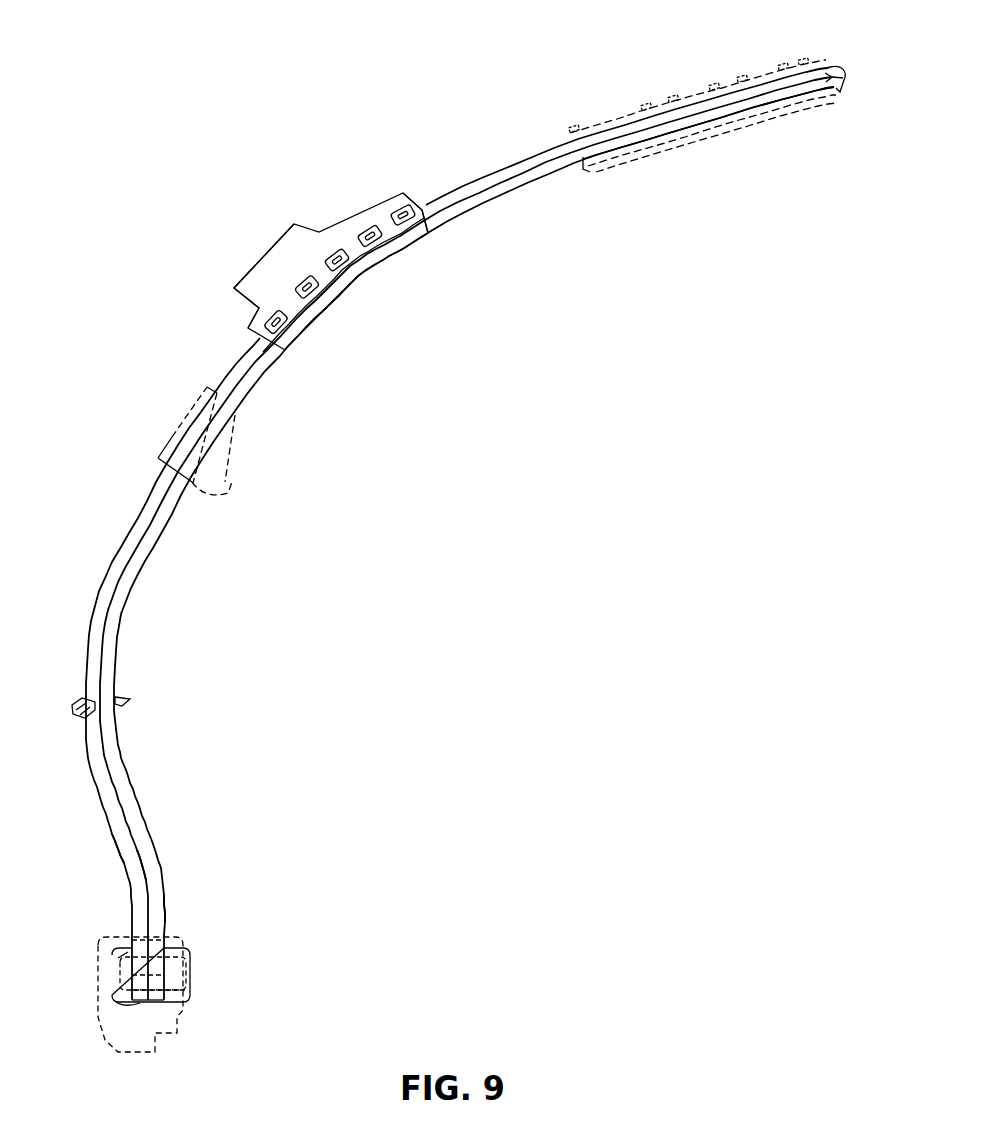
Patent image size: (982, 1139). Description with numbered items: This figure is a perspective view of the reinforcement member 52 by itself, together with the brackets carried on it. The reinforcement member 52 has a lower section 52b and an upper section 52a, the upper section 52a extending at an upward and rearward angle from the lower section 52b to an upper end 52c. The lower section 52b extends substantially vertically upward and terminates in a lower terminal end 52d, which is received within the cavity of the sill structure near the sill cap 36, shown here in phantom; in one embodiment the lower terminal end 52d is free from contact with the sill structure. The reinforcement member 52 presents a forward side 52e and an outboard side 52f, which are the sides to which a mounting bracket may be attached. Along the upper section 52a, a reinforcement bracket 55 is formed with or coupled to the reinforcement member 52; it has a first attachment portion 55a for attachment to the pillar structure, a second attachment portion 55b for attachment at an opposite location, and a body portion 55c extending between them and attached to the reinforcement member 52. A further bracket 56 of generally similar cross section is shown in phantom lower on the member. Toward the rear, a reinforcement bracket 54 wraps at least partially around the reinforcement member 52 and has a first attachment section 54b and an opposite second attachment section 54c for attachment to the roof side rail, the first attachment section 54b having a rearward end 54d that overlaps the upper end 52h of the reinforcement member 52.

The sill cap 36 is at (196, 990).
The reinforcement member 52 is at (140, 567).
The upper section 52a is at (608, 158).
The lower section 52b is at (167, 911).
The upper end 52c is at (818, 87).
The lower terminal end 52d is at (140, 1003).
The forward side 52e is at (135, 874).
The outboard side 52f is at (153, 857).
The upper end 52h is at (831, 66).
The reinforcement bracket 54 is at (733, 121).
The first attachment section 54b is at (580, 130).
The second attachment section 54c is at (668, 137).
The rearward end 54d is at (786, 65).
The reinforcement bracket 55 is at (346, 227).
The first attachment portion 55a is at (252, 265).
The second attachment portion 55b is at (331, 290).
The body portion 55c is at (408, 192).
The bracket 56 is at (237, 497).